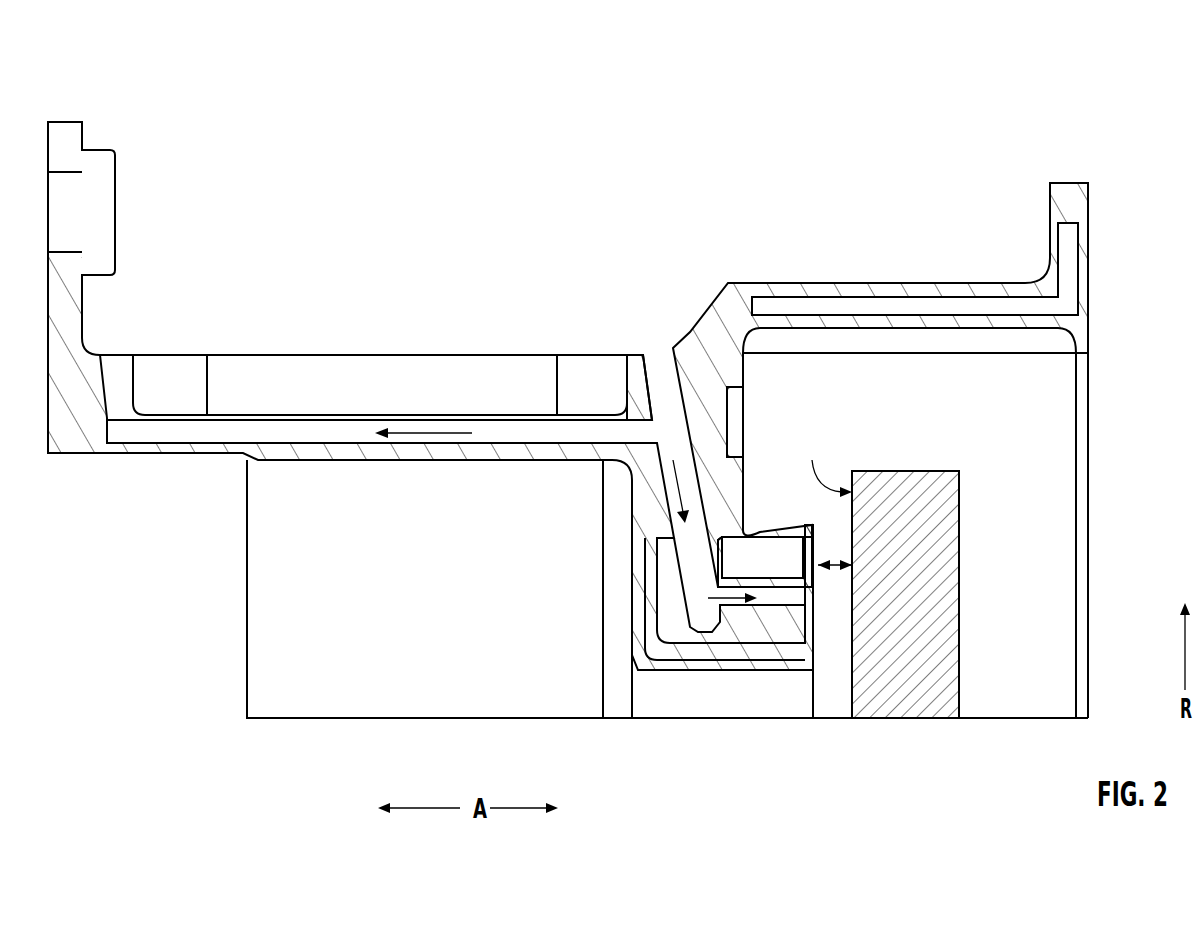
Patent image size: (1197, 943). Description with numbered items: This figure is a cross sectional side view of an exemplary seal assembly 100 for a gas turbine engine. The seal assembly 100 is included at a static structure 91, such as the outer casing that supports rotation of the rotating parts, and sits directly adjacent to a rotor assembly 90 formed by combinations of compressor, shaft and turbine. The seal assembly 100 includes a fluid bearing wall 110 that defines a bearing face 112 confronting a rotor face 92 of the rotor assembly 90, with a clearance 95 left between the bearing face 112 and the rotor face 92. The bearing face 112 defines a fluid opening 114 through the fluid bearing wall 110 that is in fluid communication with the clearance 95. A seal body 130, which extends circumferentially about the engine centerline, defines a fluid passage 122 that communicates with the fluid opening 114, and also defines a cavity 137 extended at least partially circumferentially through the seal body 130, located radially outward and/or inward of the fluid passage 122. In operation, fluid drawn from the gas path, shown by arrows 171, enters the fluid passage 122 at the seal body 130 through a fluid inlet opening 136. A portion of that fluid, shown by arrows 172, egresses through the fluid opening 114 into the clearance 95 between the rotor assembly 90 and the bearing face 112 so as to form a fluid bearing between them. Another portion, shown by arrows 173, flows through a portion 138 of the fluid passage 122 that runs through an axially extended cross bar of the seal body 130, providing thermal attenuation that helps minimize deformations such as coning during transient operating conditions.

The rotor assembly 90 is at (959, 693).
The static structure 91 is at (805, 78).
The rotor face 92 is at (826, 463).
The clearance 95 is at (833, 570).
The seal assembly 100 is at (798, 137).
The fluid bearing wall 110 is at (822, 532).
The bearing face 112 is at (818, 548).
The fluid opening 114 is at (818, 605).
The fluid passage 122 is at (728, 388).
The seal body 130 is at (705, 300).
The fluid inlet opening 136 is at (651, 340).
The cavity 137 is at (950, 302).
The portion of the fluid passage 138 is at (277, 418).
The arrows depicting flow of fluid 171 is at (587, 268).
The arrows depicting portion of fluid 172 is at (672, 478).
The arrows depicting portion of fluid 173 is at (440, 427).